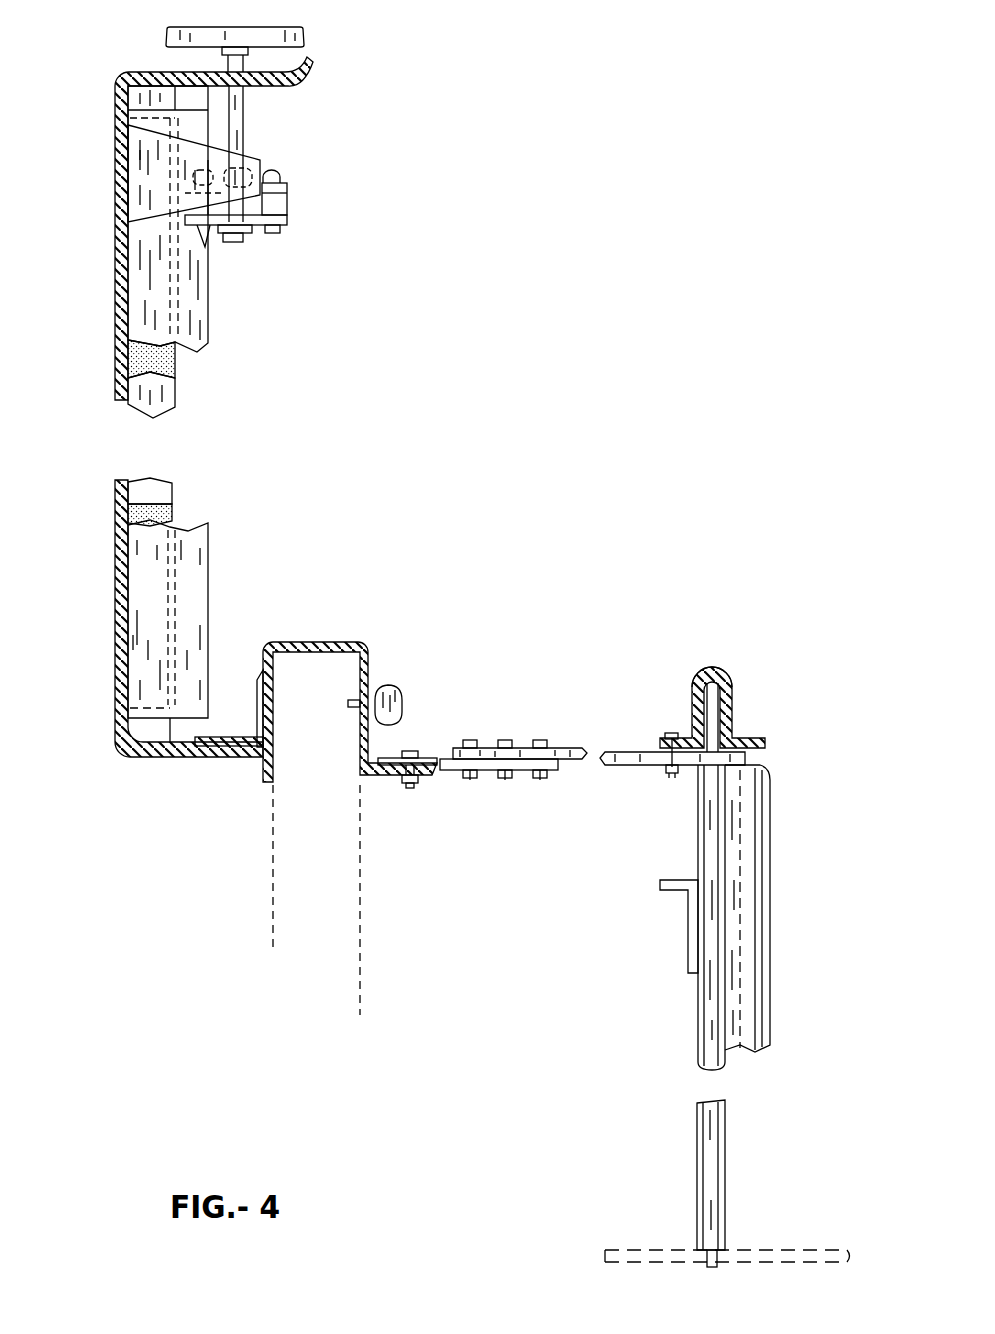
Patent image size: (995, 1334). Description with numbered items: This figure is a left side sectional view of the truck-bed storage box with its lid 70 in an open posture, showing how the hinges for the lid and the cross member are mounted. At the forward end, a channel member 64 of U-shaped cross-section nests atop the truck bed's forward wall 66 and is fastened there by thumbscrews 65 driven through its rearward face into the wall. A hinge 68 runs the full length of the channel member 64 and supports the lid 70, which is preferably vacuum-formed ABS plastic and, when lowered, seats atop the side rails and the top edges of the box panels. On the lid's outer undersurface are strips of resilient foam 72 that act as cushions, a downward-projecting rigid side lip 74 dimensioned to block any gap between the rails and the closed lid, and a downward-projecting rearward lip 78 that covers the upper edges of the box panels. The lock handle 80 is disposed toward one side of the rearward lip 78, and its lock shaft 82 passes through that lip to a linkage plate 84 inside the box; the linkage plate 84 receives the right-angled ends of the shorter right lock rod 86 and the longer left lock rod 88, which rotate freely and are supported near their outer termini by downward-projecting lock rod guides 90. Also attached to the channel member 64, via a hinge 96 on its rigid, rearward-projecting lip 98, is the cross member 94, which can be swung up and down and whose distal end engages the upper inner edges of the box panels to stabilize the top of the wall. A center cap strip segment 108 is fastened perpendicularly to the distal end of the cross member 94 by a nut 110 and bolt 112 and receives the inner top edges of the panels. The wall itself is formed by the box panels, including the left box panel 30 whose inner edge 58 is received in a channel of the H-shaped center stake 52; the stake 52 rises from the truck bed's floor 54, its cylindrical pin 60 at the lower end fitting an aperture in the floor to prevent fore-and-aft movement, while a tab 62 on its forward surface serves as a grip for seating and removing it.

The left box panel 30 is at (770, 902).
The center stake 52 is at (718, 865).
The truck bed's floor 54 is at (820, 1248).
The inner edge of left box panel 58 is at (733, 710).
The cylindrical pin 60 is at (712, 1268).
The tab 62 is at (675, 880).
The channel member 64 is at (330, 643).
The thumbscrew 65 is at (382, 688).
The forward wall 66 is at (328, 860).
The hinge 68 is at (257, 693).
The lid 70 is at (128, 362).
The resilient foam strip 72 is at (177, 375).
The side lip 74 is at (183, 295).
The rearward lip 78 is at (182, 72).
The lock handle 80 is at (262, 27).
The lock shaft 82 is at (243, 110).
The linkage plate 84 is at (290, 210).
The right lock rod 86 is at (245, 168).
The left lock rod 88 is at (280, 172).
The lock rod guide 90 is at (148, 185).
The cross member 94 is at (490, 747).
The hinge 96 is at (453, 773).
The rearward-projecting lip 98 is at (387, 778).
The center cap strip segment 108 is at (710, 665).
The nut 110 is at (680, 768).
The bolt 112 is at (675, 733).